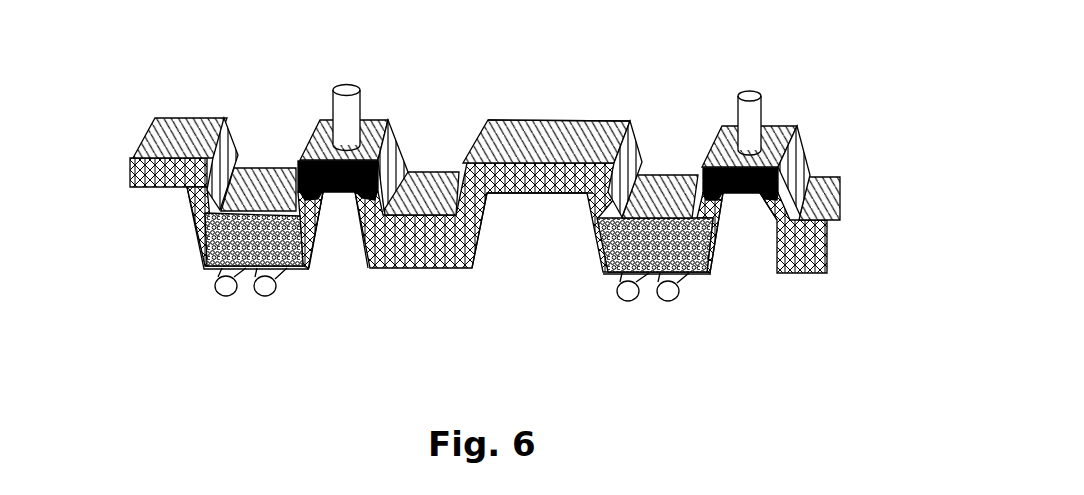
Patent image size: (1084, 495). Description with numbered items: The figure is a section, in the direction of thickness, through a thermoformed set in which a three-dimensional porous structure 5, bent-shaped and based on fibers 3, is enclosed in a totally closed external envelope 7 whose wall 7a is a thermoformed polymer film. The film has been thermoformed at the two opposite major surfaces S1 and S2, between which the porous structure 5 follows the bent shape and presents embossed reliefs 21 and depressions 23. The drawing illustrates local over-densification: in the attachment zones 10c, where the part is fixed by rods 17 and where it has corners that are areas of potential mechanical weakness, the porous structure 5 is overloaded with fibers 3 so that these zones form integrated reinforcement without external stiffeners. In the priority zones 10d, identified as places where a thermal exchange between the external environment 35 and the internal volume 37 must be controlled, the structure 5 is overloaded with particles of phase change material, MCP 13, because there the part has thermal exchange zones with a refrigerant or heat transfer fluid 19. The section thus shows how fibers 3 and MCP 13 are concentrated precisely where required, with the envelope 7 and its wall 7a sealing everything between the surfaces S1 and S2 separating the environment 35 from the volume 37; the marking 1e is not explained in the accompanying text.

The fibers 3 is at (157, 185).
The porous structure 5 is at (798, 265).
The external envelope 7 is at (590, 127).
The wall 7a is at (533, 133).
The attachment zones 10c is at (302, 55).
The thermal exchange zones 10d is at (308, 352).
The MCP particles 13 is at (197, 235).
The rods 17 is at (333, 108).
The refrigerant or heat transfer fluid 19 is at (227, 288).
The reliefs 21 is at (808, 158).
The depressions 23 is at (547, 194).
The bottom surface 1e is at (407, 272).
The first major surface S1 is at (268, 178).
The second major surface S2 is at (367, 264).
The external environment 35 is at (500, 333).
The internal volume 37 is at (500, 43).